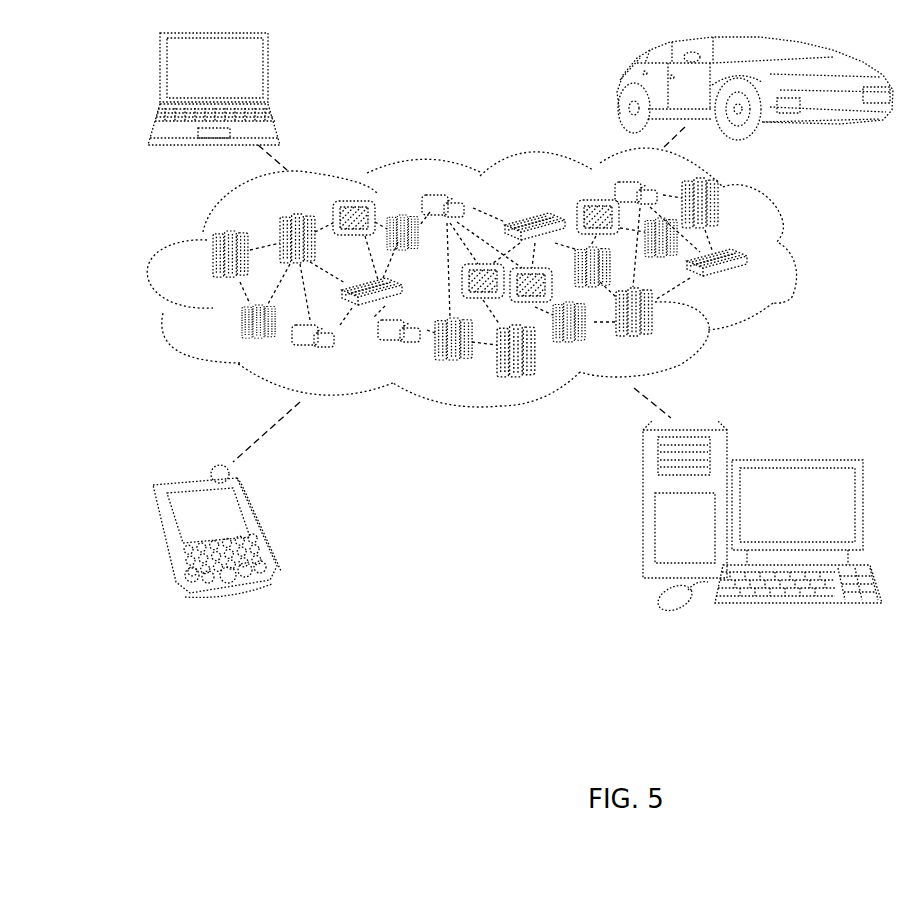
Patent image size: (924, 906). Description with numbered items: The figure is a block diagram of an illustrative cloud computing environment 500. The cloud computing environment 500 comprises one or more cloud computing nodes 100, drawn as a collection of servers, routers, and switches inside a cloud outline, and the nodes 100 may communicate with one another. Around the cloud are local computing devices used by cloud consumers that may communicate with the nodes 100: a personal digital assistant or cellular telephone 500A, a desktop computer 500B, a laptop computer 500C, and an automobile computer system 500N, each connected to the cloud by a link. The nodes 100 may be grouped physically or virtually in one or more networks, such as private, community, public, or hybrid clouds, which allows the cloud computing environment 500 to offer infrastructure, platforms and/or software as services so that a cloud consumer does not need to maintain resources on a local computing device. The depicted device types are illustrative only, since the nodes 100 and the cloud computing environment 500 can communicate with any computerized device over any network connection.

The cloud computing environment 500 is at (800, 258).
The cloud computing node 100 is at (747, 283).
The personal digital assistant (PDA) or cellular telephone 500A is at (265, 523).
The desktop computer 500B is at (795, 457).
The laptop computer 500C is at (277, 73).
The automobile computer system 500N is at (617, 85).